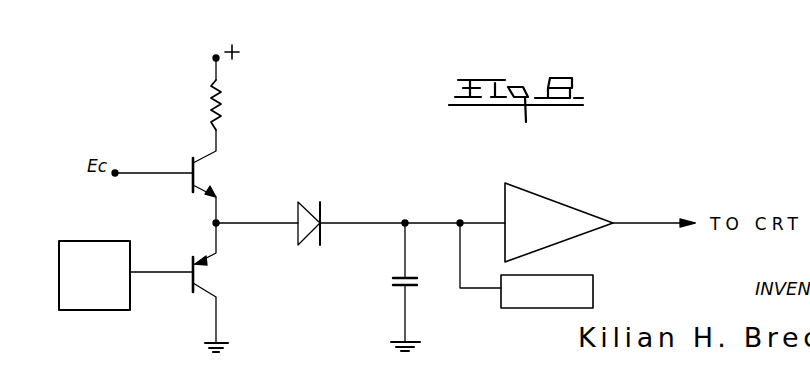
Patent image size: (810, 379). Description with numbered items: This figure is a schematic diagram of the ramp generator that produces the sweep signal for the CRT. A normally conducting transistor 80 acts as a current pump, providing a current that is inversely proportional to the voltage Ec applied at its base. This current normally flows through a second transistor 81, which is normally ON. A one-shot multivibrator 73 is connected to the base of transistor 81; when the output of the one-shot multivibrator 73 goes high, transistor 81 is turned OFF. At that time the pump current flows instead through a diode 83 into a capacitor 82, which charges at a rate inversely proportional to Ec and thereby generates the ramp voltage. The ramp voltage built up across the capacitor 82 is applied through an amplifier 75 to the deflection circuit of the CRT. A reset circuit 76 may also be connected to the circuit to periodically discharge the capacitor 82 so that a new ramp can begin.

The one-shot multivibrator 73 is at (73, 310).
The amplifier 75 is at (559, 217).
The reset circuit 76 is at (577, 276).
The transistor 80 is at (190, 176).
The transistor 81 is at (195, 287).
The capacitor 82 is at (392, 282).
The diode 83 is at (334, 216).